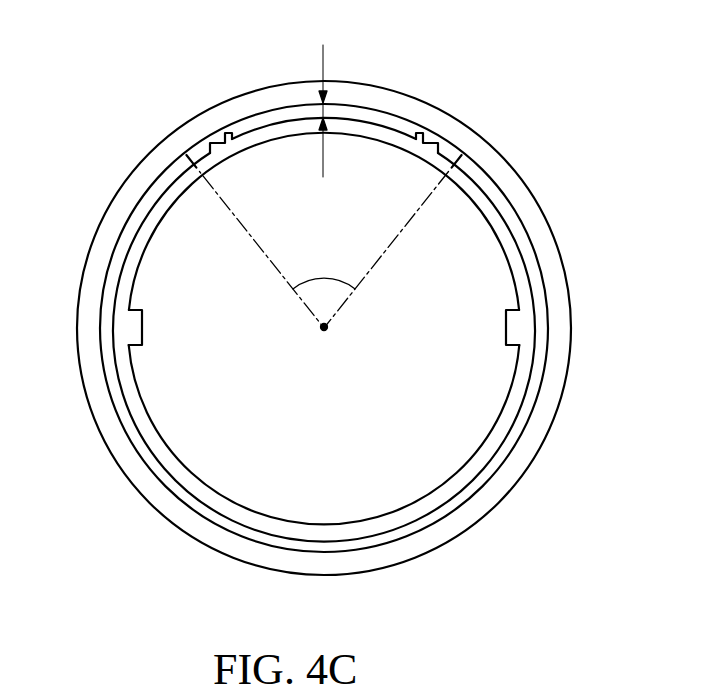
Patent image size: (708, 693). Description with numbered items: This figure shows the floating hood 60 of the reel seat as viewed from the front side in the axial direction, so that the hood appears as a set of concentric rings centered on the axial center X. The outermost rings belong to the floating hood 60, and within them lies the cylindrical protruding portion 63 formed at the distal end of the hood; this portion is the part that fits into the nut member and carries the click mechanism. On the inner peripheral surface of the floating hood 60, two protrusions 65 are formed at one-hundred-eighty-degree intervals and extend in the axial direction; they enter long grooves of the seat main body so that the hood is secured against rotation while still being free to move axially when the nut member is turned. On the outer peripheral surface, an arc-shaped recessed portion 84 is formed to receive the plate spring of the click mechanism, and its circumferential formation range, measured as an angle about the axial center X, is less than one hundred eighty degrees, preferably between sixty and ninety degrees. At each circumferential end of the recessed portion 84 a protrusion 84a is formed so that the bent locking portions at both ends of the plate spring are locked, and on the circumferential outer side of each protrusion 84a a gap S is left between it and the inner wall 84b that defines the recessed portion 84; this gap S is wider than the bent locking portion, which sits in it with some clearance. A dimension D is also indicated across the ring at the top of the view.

The floating hood 60 is at (566, 422).
The cylindrical protruding portion 63 is at (508, 243).
The protrusions 65 is at (131, 331).
The recessed portion 84 is at (358, 112).
The protrusions 84a is at (226, 131).
The inner walls 84b is at (186, 153).
The gap S is at (194, 157).
The thickness of ring member D is at (341, 113).
The axial center X is at (324, 331).